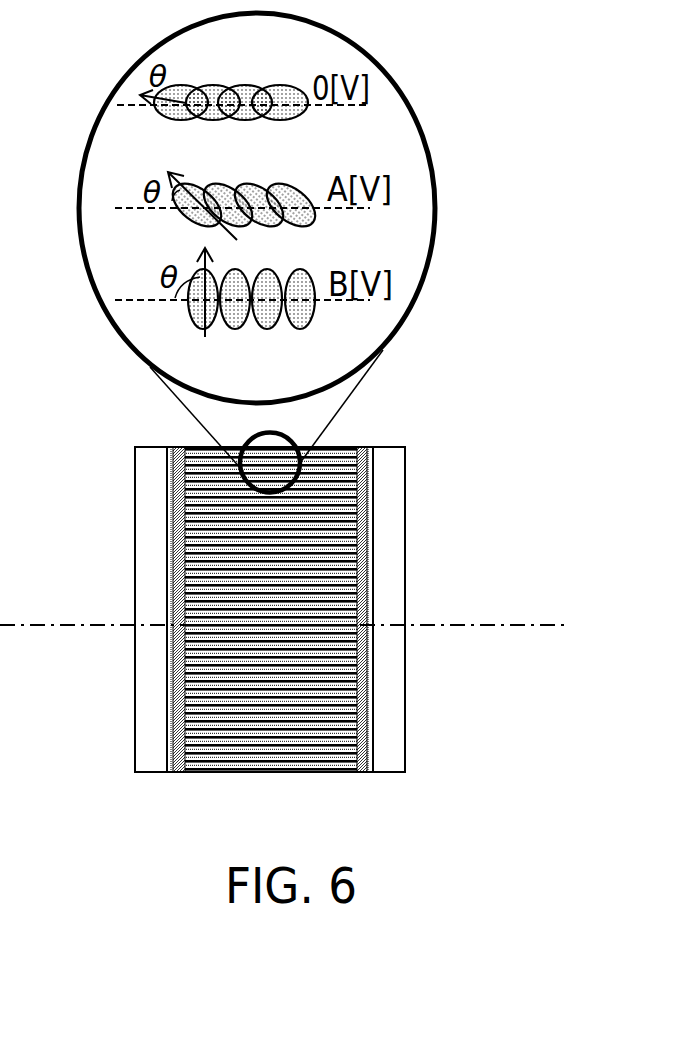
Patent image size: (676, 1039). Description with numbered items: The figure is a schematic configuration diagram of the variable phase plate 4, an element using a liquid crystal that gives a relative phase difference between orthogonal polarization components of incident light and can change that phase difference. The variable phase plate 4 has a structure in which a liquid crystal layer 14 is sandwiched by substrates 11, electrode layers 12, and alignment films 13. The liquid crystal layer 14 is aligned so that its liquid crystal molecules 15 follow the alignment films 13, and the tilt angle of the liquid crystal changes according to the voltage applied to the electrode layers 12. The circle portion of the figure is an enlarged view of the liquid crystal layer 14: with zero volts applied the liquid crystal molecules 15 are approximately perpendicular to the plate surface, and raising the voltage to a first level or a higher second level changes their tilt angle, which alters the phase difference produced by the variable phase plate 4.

The variable phase plate 4 is at (217, 642).
The substrate 11 is at (147, 765).
The electrode layer 12 is at (172, 773).
The alignment film 13 is at (185, 773).
The liquid crystal layer 14 is at (308, 728).
The liquid crystal molecules 15 is at (305, 315).